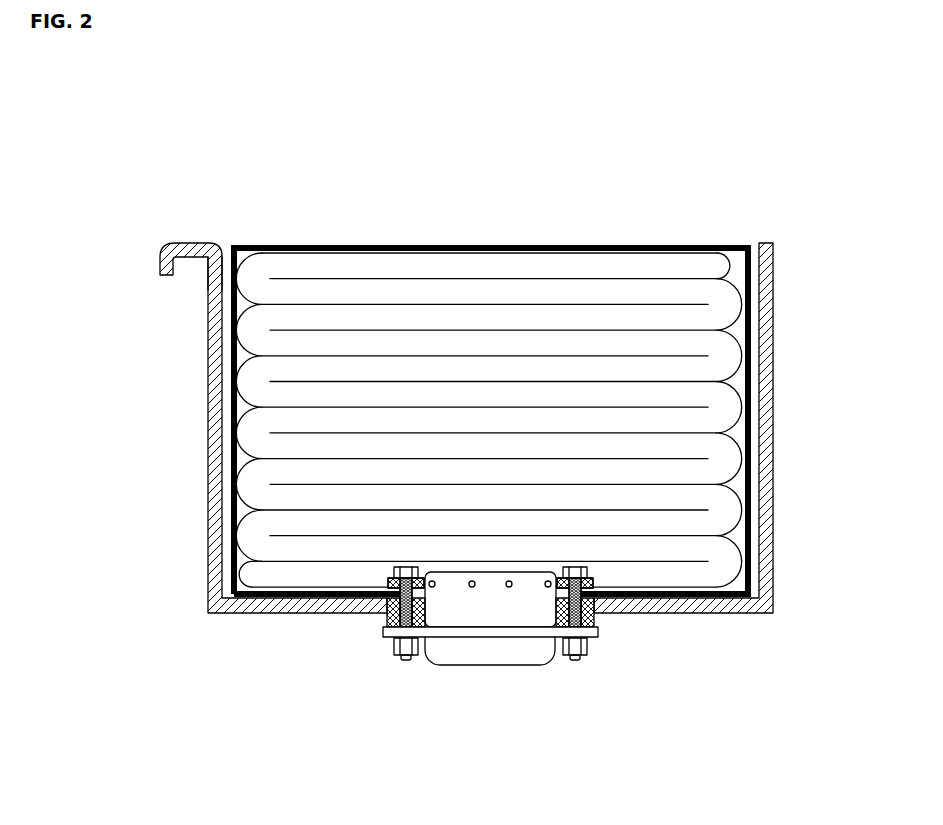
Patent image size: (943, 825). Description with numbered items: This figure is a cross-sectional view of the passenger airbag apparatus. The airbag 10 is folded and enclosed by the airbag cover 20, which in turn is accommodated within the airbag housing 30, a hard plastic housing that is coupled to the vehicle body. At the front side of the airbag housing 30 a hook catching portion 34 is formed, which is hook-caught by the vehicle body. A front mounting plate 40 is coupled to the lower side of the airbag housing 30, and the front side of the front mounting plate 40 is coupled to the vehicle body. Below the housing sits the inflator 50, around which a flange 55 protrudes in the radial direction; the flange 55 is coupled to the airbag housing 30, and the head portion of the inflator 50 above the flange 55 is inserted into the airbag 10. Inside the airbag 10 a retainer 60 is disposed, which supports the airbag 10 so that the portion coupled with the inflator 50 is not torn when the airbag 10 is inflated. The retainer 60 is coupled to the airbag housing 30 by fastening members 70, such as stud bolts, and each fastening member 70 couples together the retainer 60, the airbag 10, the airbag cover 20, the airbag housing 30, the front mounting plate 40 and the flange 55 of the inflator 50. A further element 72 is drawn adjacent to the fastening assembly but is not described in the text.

The airbag 10 is at (722, 510).
The airbag cover 20 is at (675, 243).
The airbag housing 30 is at (208, 497).
The hook catching portion 34 is at (187, 243).
The front mounting plate 40 is at (383, 628).
The inflator 50 is at (497, 652).
The flange 55 is at (405, 658).
The retainer 60 is at (592, 581).
The fastening member 70 is at (393, 630).
The bushing 72 is at (596, 625).